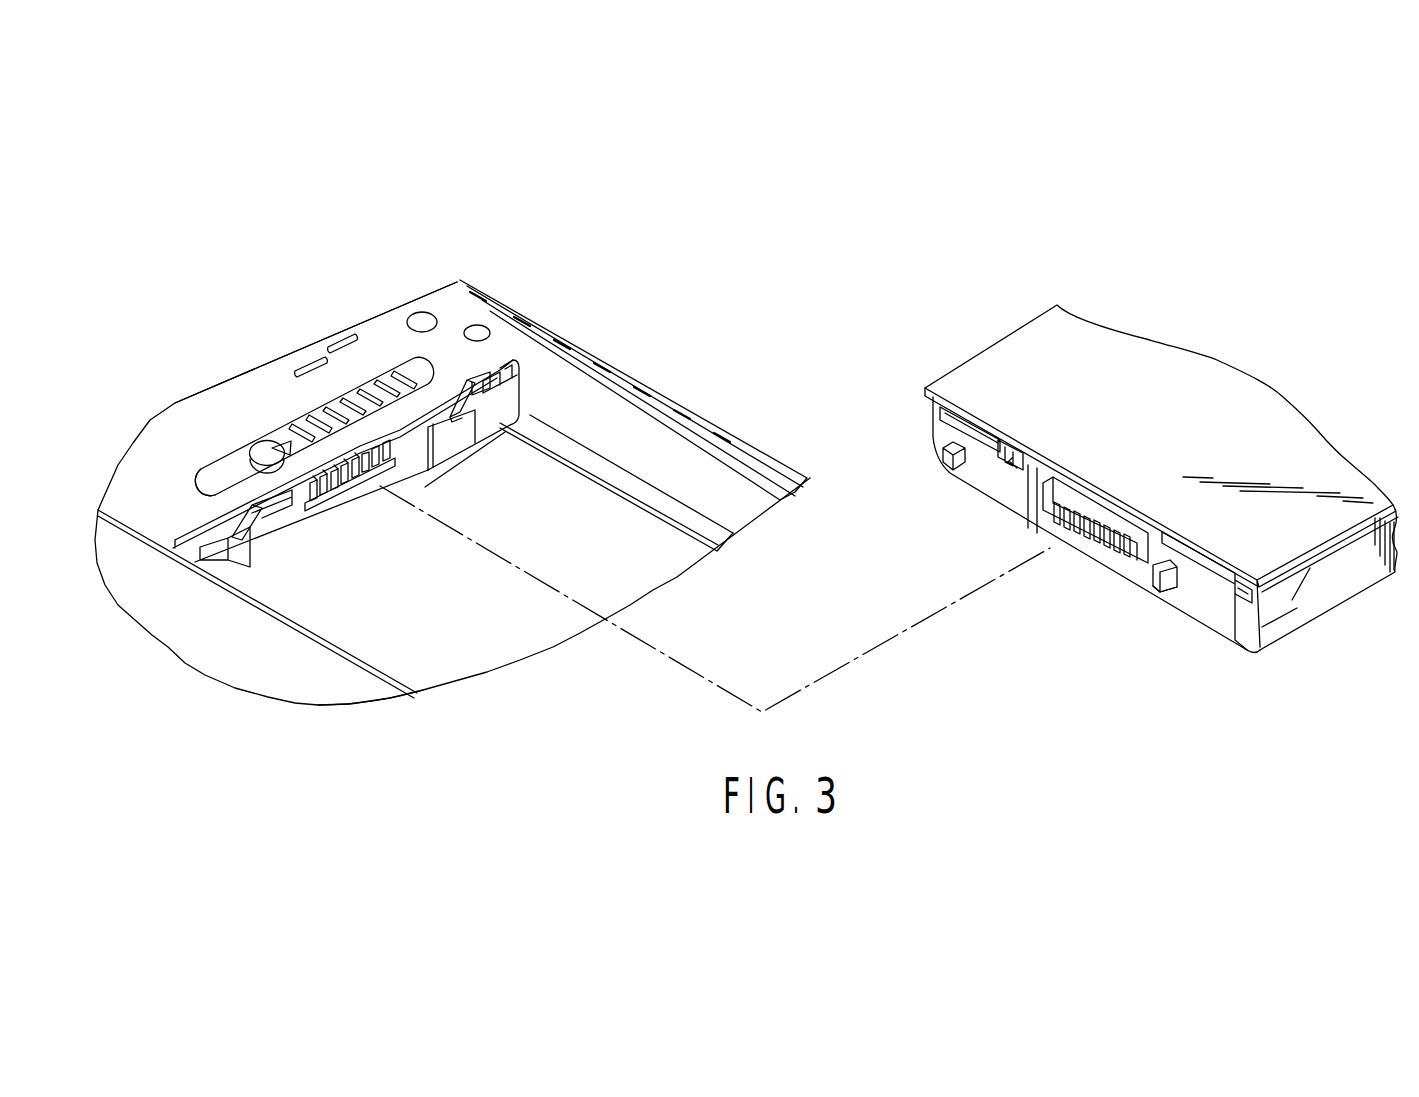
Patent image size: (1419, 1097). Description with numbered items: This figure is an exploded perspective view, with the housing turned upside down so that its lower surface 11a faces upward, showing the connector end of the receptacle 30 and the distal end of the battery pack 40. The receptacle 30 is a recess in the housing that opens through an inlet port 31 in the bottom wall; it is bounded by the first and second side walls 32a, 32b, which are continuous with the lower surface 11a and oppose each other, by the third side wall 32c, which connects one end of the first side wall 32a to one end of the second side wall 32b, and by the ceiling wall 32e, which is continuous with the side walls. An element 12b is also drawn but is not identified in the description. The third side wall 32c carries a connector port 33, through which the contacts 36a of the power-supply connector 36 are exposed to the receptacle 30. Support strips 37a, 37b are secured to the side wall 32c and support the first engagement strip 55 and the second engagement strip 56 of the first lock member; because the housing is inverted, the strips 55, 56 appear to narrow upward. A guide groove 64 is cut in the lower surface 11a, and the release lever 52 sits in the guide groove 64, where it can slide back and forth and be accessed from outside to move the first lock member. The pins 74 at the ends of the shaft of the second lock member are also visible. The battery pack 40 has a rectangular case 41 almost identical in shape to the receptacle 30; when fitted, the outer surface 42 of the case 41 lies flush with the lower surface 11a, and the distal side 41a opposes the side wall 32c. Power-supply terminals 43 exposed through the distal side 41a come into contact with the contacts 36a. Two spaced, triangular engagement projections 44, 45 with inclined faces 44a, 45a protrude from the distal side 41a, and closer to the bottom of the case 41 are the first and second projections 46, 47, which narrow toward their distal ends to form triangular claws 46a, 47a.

The receptacle 30 is at (405, 655).
The lower surface of the housing 11a is at (218, 412).
The bottom wall 12b is at (455, 668).
The inlet port 31 is at (742, 472).
The first side wall 32a is at (643, 443).
The second side wall 32b is at (352, 636).
The third side wall 32c is at (512, 405).
The ceiling wall 32e is at (648, 528).
The connector port 33 is at (323, 502).
The power-supply connector 36 is at (402, 467).
The contacts 36a is at (352, 480).
The support strip 37a is at (478, 404).
The support strip 37b is at (233, 562).
The release lever 52 is at (285, 440).
The first engagement strip 55 is at (512, 433).
The second engagement strip 56 is at (262, 520).
The guide groove 64 is at (215, 472).
The pins 74 is at (516, 360).
The battery pack 40 is at (1145, 490).
The case 41 is at (943, 375).
The distal side 41a is at (1250, 653).
The outer surface of the case 42 is at (1040, 330).
The power-supply terminals 43 is at (1123, 560).
The first engagement projection 44 is at (943, 455).
The inclined face 44a is at (957, 465).
The second engagement projection 45 is at (1157, 587).
The inclined face 45a is at (1163, 588).
The first projection 46 is at (1012, 465).
The triangular claw 46a is at (1010, 467).
The second projection 47 is at (1257, 580).
The triangular claw 47a is at (1246, 640).